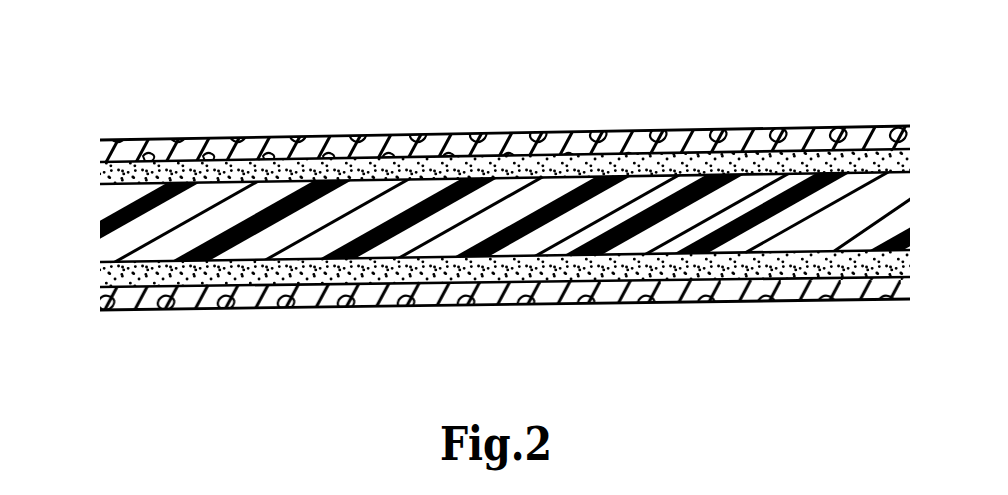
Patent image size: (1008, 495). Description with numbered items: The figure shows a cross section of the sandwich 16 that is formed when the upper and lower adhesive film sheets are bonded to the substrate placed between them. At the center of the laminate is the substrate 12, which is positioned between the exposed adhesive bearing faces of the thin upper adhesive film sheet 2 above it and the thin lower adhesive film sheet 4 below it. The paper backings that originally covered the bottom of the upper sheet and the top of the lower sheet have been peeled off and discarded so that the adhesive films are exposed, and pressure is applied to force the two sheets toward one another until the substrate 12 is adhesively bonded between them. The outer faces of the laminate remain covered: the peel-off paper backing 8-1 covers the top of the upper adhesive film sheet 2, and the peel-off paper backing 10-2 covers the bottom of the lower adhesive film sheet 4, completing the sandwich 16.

The sandwich 16 is at (506, 212).
The peel-off paper backing 8-1 is at (673, 143).
The upper adhesive film sheet 2 is at (565, 165).
The substrate 12 is at (588, 230).
The lower adhesive film sheet 4 is at (238, 273).
The peel-off paper backing 10-2 is at (434, 290).